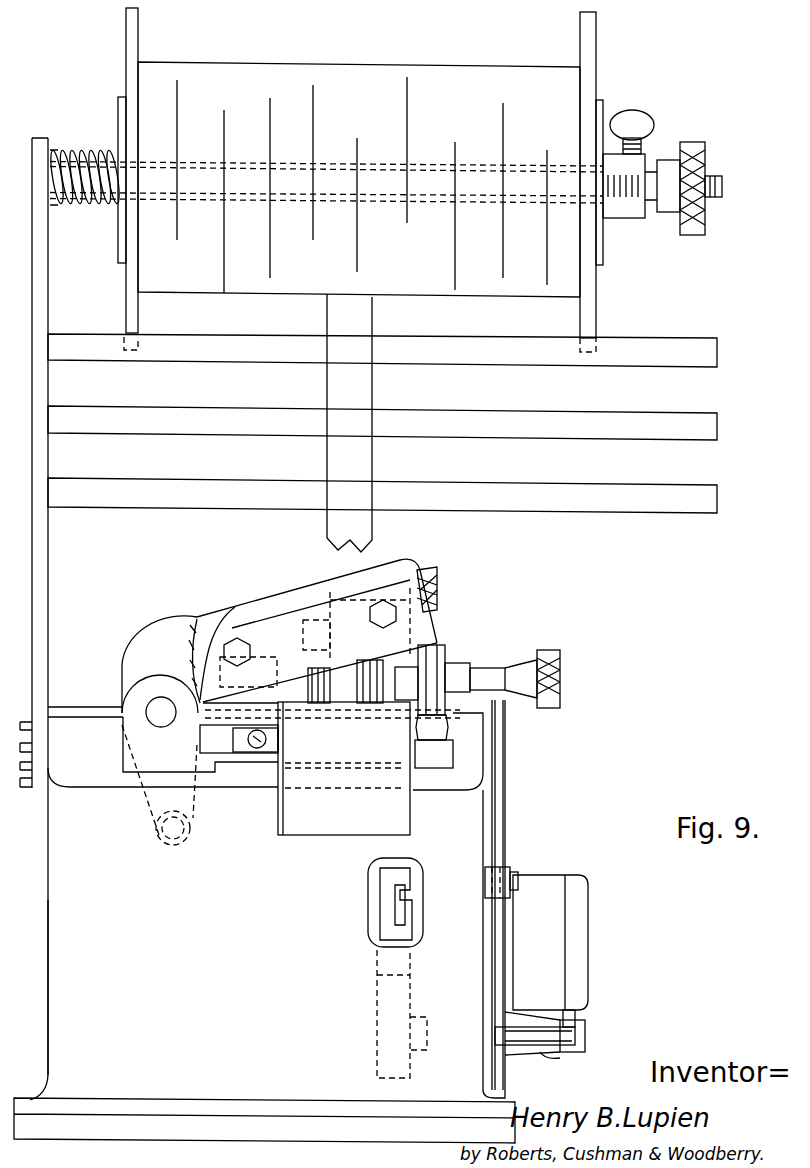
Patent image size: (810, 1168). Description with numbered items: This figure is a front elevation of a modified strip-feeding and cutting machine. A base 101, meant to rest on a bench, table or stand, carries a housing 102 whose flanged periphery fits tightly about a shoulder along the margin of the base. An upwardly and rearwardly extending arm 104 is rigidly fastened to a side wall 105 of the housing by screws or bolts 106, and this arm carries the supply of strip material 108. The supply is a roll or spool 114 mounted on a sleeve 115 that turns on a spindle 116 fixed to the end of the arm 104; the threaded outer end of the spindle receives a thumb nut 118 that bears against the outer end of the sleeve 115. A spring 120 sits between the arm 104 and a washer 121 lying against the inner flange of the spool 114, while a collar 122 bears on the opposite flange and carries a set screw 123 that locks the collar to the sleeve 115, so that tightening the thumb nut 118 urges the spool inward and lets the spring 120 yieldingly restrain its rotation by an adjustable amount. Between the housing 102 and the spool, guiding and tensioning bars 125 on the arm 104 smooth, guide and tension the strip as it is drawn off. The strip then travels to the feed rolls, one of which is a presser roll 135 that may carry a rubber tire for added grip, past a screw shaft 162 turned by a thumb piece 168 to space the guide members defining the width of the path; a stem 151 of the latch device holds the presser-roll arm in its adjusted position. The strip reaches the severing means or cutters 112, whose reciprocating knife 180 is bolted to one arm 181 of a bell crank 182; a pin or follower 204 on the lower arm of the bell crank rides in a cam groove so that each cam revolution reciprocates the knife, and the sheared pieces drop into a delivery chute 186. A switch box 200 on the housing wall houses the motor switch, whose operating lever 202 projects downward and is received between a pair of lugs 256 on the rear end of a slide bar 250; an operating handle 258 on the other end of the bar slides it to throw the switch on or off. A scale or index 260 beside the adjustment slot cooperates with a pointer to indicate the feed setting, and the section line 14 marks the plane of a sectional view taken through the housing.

The spool 114 is at (148, 62).
The washer 121 is at (118, 100).
The spring 120 is at (62, 150).
The sleeve 115 is at (184, 159).
The set screw 123 is at (630, 118).
The thumb nut 118 is at (700, 145).
The spindle 116 is at (724, 185).
The collar 122 is at (605, 222).
The guiding and tensioning bars 125 is at (717, 367).
The strip material 108 is at (327, 536).
The arm 104 is at (48, 572).
The severing means or cutters 112 is at (200, 608).
The arm of bell crank 181 is at (284, 605).
The bell crank 182 is at (128, 665).
The reciprocating knife 180 is at (310, 633).
The stem 151 is at (426, 594).
The presser roll 135 is at (357, 683).
The screw shaft 162 is at (487, 667).
The thumb piece 168 is at (549, 660).
The delivery chute 186 is at (352, 899).
The screws or bolts 106 is at (32, 747).
The pin or follower 204 is at (167, 840).
The side wall 105 is at (46, 918).
The housing 102 is at (42, 982).
The scale or index 260 is at (513, 912).
The switch box 200 is at (550, 942).
The slide bar 250 is at (490, 1031).
The operating lever 202 is at (577, 1012).
The lugs 256 is at (583, 1030).
The operating handle 258 is at (560, 1058).
The base 101 is at (500, 1125).
The section line 14- 14 is at (85, 826).